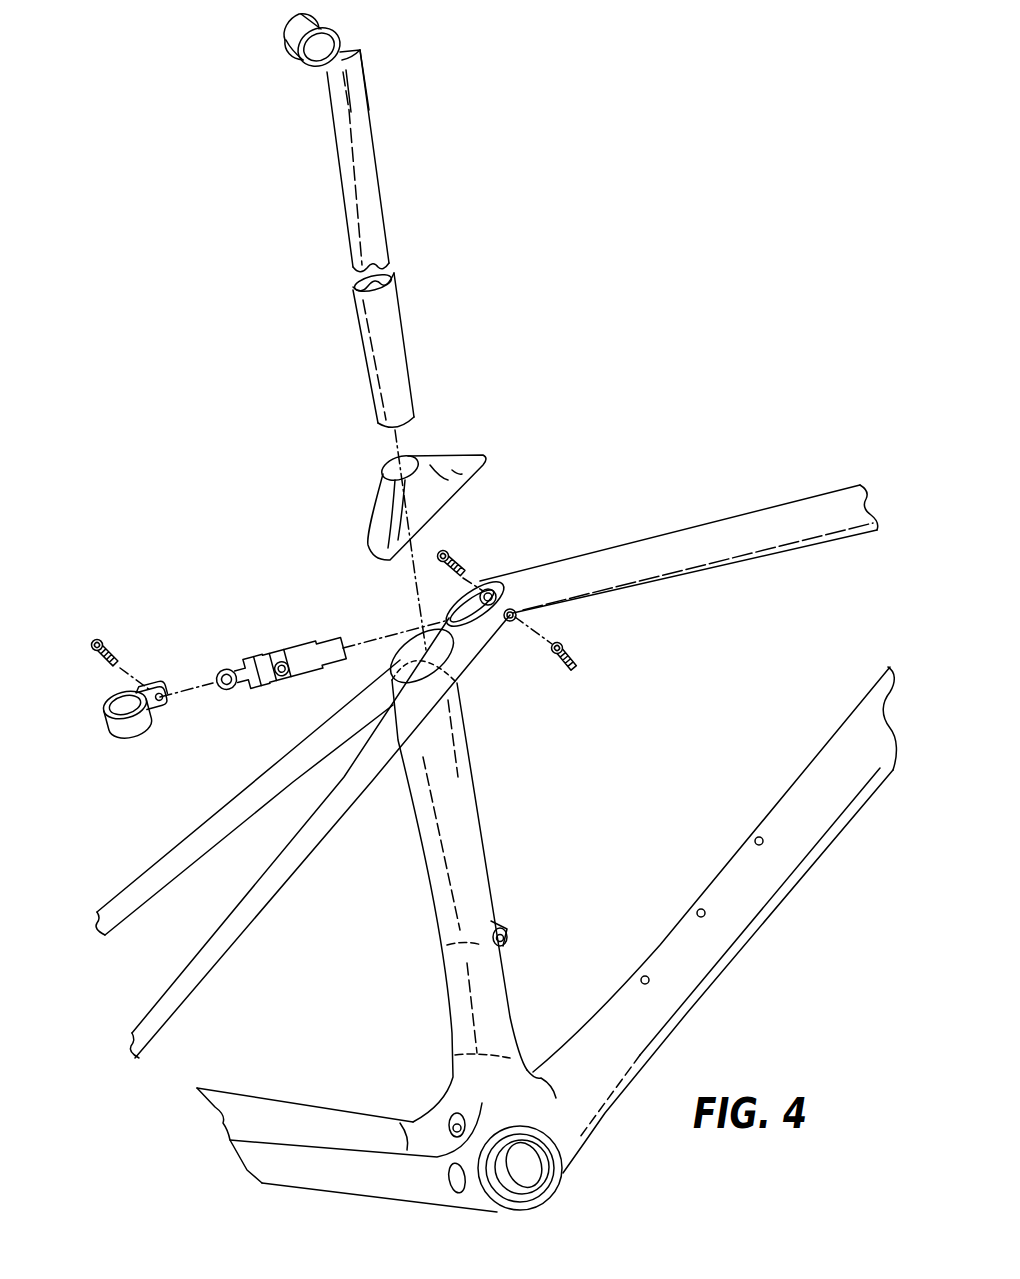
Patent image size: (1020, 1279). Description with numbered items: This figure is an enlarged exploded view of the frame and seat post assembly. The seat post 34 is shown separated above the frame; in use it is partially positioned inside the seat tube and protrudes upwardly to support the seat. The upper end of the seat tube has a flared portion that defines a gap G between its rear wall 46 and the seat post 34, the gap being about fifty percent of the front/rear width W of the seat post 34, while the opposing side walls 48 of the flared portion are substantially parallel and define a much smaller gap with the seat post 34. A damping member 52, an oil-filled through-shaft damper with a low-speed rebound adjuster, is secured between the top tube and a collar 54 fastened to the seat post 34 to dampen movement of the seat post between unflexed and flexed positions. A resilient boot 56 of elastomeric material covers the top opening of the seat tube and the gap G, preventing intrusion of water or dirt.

The seat post 34 is at (355, 143).
The front/rear width of the seat post W is at (258, 232).
The resilient boot 56 is at (393, 500).
The opposing side walls 48 is at (412, 652).
The gap G is at (445, 680).
The rear wall 46 is at (390, 688).
The damping member 52 is at (303, 655).
The collar 54 is at (127, 727).